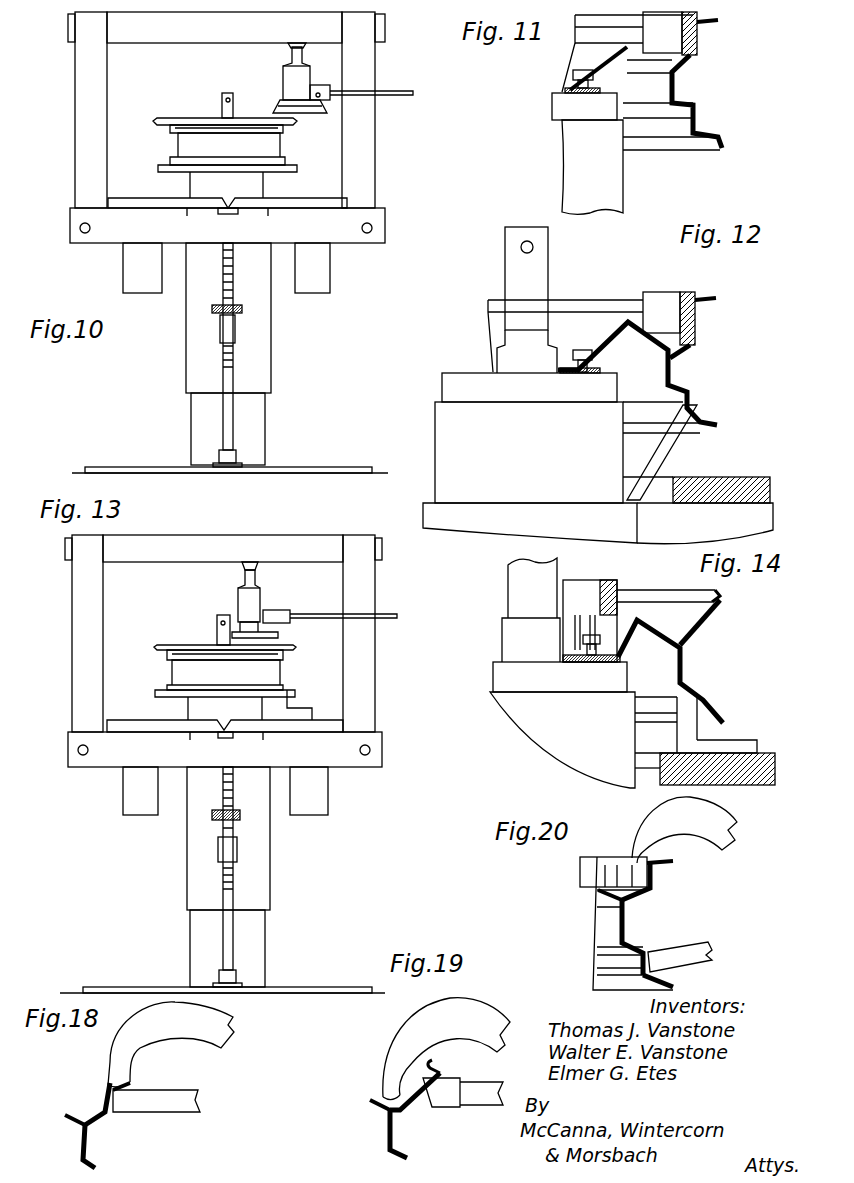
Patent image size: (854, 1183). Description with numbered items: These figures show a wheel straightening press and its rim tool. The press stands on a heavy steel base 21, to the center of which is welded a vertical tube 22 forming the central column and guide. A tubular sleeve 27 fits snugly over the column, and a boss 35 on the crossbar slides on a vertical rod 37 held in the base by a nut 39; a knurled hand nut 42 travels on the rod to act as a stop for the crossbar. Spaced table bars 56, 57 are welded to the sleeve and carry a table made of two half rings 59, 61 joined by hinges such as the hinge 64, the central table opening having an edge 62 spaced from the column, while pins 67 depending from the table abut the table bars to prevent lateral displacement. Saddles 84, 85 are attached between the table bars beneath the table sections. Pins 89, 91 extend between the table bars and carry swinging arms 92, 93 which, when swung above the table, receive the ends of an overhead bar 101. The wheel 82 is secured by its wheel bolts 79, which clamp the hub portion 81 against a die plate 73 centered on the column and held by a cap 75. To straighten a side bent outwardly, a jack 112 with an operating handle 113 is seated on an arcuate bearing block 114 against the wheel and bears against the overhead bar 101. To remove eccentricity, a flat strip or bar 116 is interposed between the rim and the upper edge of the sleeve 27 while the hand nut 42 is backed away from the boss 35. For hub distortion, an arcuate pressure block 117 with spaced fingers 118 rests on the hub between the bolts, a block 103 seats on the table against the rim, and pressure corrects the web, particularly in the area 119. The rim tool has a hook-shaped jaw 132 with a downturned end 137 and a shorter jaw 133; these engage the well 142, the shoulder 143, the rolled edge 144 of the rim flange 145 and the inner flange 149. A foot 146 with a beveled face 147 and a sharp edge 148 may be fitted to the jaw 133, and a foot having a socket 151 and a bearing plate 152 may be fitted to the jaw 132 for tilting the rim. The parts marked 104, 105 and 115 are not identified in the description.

In FIG. 10, the base 21 is at (322, 470).
In FIG. 13, the base 21 is at (130, 987).
In FIG. 10, the tube 22 is at (200, 422).
In FIG. 11, the tube 22 is at (592, 167).
In FIG. 12, the tube 22 is at (529, 452).
In FIG. 13, the tube 22 is at (258, 928).
In FIG. 14, the tube 22 is at (562, 740).
In FIG. 10, the tubular sleeve 27 is at (228, 318).
In FIG. 12, the tubular sleeve 27 is at (530, 523).
In FIG. 13, the tubular sleeve 27 is at (228, 838).
In FIG. 10, the boss 35 is at (236, 330).
In FIG. 13, the boss 35 is at (236, 850).
In FIG. 10, the rod 37 is at (235, 410).
In FIG. 13, the rod 37 is at (222, 905).
In FIG. 10, the nut 39 is at (222, 462).
In FIG. 13, the nut 39 is at (240, 978).
In FIG. 10, the knurled hand nut 42 is at (215, 312).
In FIG. 13, the knurled hand nut 42 is at (212, 818).
In FIG. 12, the table bar 56 is at (705, 523).
In FIG. 10, the table bar 57 is at (113, 245).
In FIG. 13, the table bar 57 is at (225, 749).
In FIG. 10, the half ring 59 is at (297, 200).
In FIG. 12, the half ring 59 is at (750, 482).
In FIG. 14, the half ring 59 is at (765, 780).
In FIG. 10, the half ring 61 is at (137, 198).
In FIG. 13, the half ring 61 is at (190, 740).
In FIG. 12, the edge of table opening 62 is at (678, 482).
In FIG. 14, the edge of table opening 62 is at (640, 768).
In FIG. 10, the hinge 64 is at (228, 214).
In FIG. 13, the hinge 64 is at (228, 738).
In FIG. 10, the pin 67 is at (268, 212).
In FIG. 11, the die plate 73 is at (584, 106).
In FIG. 12, the die plate 73 is at (529, 387).
In FIG. 14, the die plate 73 is at (560, 678).
In FIG. 10, the cap 75 is at (225, 110).
In FIG. 12, the cap 75 is at (527, 300).
In FIG. 13, the cap 75 is at (217, 630).
In FIG. 14, the cap 75 is at (512, 578).
In FIG. 11, the wheel bolt 79 is at (565, 75).
In FIG. 12, the wheel bolt 79 is at (583, 350).
In FIG. 14, the wheel bolt 79 is at (580, 650).
In FIG. 11, the hub portion 81 is at (560, 90).
In FIG. 12, the hub portion 81 is at (595, 374).
In FIG. 14, the hub portion 81 is at (595, 662).
In FIG. 10, the wheel 82 is at (207, 135).
In FIG. 11, the wheel 82 is at (550, 46).
In FIG. 12, the wheel 82 is at (631, 290).
In FIG. 13, the wheel 82 is at (204, 650).
In FIG. 14, the wheel 82 is at (668, 590).
In FIG. 10, the saddle 84 is at (312, 268).
In FIG. 13, the saddle 84 is at (309, 791).
In FIG. 10, the saddle 85 is at (142, 268).
In FIG. 13, the saddle 85 is at (140, 791).
In FIG. 10, the pin 89 is at (366, 235).
In FIG. 13, the pin 89 is at (371, 750).
In FIG. 10, the pin 91 is at (84, 235).
In FIG. 13, the pin 91 is at (80, 755).
In FIG. 10, the swinging arm 92 is at (363, 110).
In FIG. 13, the swinging arm 92 is at (362, 633).
In FIG. 10, the swinging arm 93 is at (87, 110).
In FIG. 13, the swinging arm 93 is at (84, 633).
In FIG. 10, the overhead bar 101 is at (224, 27).
In FIG. 13, the overhead bar 101 is at (223, 548).
In FIG. 13, the block 103 is at (292, 712).
In FIG. 14, the block 103 is at (715, 748).
In FIG. 14, the step 104 is at (755, 752).
In FIG. 14, the spacer block 105 is at (705, 720).
In FIG. 10, the jack 112 is at (300, 78).
In FIG. 13, the jack 112 is at (255, 605).
In FIG. 10, the operating handle 113 is at (398, 94).
In FIG. 13, the operating handle 113 is at (386, 614).
In FIG. 10, the arcuate bearing block 114 is at (272, 117).
In FIG. 11, the arcuate bearing block 114 is at (680, 33).
In FIG. 12, the arcuate bearing block 114 is at (665, 305).
In FIG. 10, the jack head 115 is at (304, 46).
In FIG. 13, the jack head 115 is at (252, 565).
In FIG. 12, the bar 116 is at (690, 410).
In FIG. 13, the arcuate pressure block 117 is at (272, 625).
In FIG. 14, the arcuate pressure block 117 is at (610, 590).
In FIG. 14, the fingers 118 is at (592, 615).
In FIG. 14, the area 119 is at (652, 620).
In FIG. 20, the jaw 132 is at (715, 822).
In FIG. 18, the jaw 132 is at (215, 1025).
In FIG. 19, the jaw 132 is at (446, 1047).
In FIG. 20, the jaw 133 is at (690, 950).
In FIG. 18, the jaw 133 is at (185, 1110).
In FIG. 19, the jaw 133 is at (481, 1093).
In FIG. 20, the end of jaw 137 is at (600, 858).
In FIG. 18, the end of jaw 137 is at (115, 1075).
In FIG. 19, the end of jaw 137 is at (398, 1078).
In FIG. 10, the well 142 is at (180, 147).
In FIG. 12, the well 142 is at (680, 370).
In FIG. 13, the well 142 is at (180, 672).
In FIG. 14, the well 142 is at (686, 670).
In FIG. 20, the well 142 is at (620, 925).
In FIG. 18, the well 142 is at (92, 1150).
In FIG. 19, the well 142 is at (388, 1138).
In FIG. 10, the shoulder portion 143 is at (172, 130).
In FIG. 12, the shoulder portion 143 is at (697, 325).
In FIG. 13, the shoulder portion 143 is at (167, 655).
In FIG. 14, the shoulder portion 143 is at (705, 622).
In FIG. 20, the shoulder portion 143 is at (652, 880).
In FIG. 18, the shoulder portion 143 is at (105, 1098).
In FIG. 19, the shoulder portion 143 is at (415, 1085).
In FIG. 12, the rolled edge 144 is at (698, 302).
In FIG. 14, the rolled edge 144 is at (722, 592).
In FIG. 20, the rolled edge 144 is at (667, 862).
In FIG. 18, the rolled edge 144 is at (130, 1082).
In FIG. 19, the rolled edge 144 is at (440, 1070).
In FIG. 10, the rim flange 145 is at (168, 118).
In FIG. 12, the rim flange 145 is at (712, 300).
In FIG. 13, the rim flange 145 is at (165, 645).
In FIG. 14, the rim flange 145 is at (722, 604).
In FIG. 20, the rim flange 145 is at (668, 867).
In FIG. 18, the rim flange 145 is at (135, 1087).
In FIG. 19, the rim flange 145 is at (425, 1068).
In FIG. 19, the foot 146 is at (442, 1092).
In FIG. 19, the beveled face 147 is at (428, 1095).
In FIG. 19, the sharp edge 148 is at (420, 1105).
In FIG. 12, the inner flange 149 is at (705, 422).
In FIG. 20, the inner flange 149 is at (640, 975).
In FIG. 20, the socket 151 is at (605, 878).
In FIG. 20, the bearing plate 152 is at (615, 857).